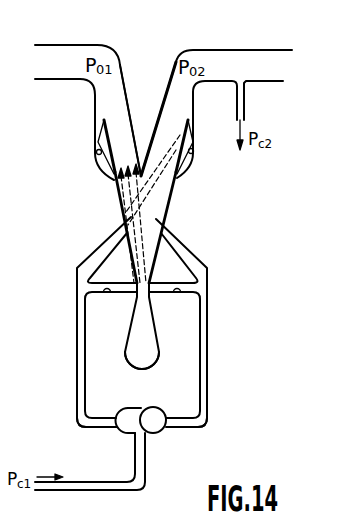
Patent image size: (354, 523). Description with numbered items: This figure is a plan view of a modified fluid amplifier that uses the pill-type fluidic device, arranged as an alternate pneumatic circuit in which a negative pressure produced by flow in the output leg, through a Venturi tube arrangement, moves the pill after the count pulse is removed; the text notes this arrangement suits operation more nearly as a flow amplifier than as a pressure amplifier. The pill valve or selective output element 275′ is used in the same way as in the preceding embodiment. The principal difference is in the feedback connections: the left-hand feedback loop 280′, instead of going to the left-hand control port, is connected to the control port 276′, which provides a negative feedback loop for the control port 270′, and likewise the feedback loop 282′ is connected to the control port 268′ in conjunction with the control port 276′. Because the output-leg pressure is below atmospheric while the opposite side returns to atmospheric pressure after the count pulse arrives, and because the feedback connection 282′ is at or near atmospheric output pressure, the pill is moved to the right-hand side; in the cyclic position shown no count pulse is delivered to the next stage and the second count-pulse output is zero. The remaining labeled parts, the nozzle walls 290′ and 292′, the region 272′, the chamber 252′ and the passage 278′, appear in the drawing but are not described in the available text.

The first nozzle wall 290' is at (135, 115).
The second nozzle wall 292' is at (152, 119).
The left-hand feedback loop 280' is at (82, 153).
The feedback loop 282' is at (202, 157).
The receiver channel 272' is at (168, 209).
The control port 268' is at (108, 308).
The control port 270' is at (172, 308).
The pressure chamber 252' is at (160, 369).
The control port 276' is at (69, 427).
The right passage 278' is at (197, 427).
The pill valve or selective output element 275' is at (160, 446).